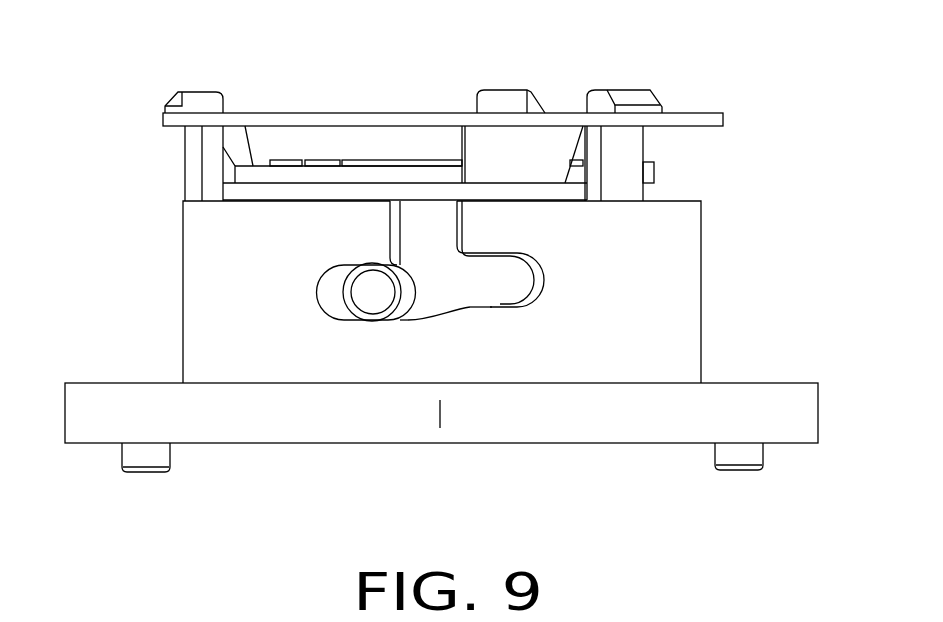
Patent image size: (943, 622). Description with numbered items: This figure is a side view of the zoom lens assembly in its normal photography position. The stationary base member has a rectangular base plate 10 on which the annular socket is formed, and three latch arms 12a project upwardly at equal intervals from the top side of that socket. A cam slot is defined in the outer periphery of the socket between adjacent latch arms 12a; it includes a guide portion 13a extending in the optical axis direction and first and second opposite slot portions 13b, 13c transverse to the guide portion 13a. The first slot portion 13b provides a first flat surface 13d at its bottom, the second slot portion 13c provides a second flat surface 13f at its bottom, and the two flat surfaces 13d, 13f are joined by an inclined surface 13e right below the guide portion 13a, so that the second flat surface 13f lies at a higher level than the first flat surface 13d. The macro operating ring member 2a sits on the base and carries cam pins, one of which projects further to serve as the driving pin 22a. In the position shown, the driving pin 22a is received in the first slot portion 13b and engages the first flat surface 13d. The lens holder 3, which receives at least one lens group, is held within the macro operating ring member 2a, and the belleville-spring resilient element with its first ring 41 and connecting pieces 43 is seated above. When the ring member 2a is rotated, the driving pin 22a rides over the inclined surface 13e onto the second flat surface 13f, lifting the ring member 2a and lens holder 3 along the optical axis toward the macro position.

The base plate 10 is at (105, 410).
The macro operating ring member 2a is at (270, 195).
The first ring 41 is at (318, 113).
The connecting pieces 43 is at (237, 147).
The latch arms 12a is at (625, 98).
The lens holder 3 is at (403, 160).
The guide portion 13a is at (432, 222).
The first slot portion 13b is at (333, 288).
The second slot portion 13c is at (513, 280).
The first flat surface 13d is at (397, 320).
The inclined surface 13e is at (427, 313).
The second flat surface 13f is at (492, 308).
The driving pin 22a is at (377, 292).